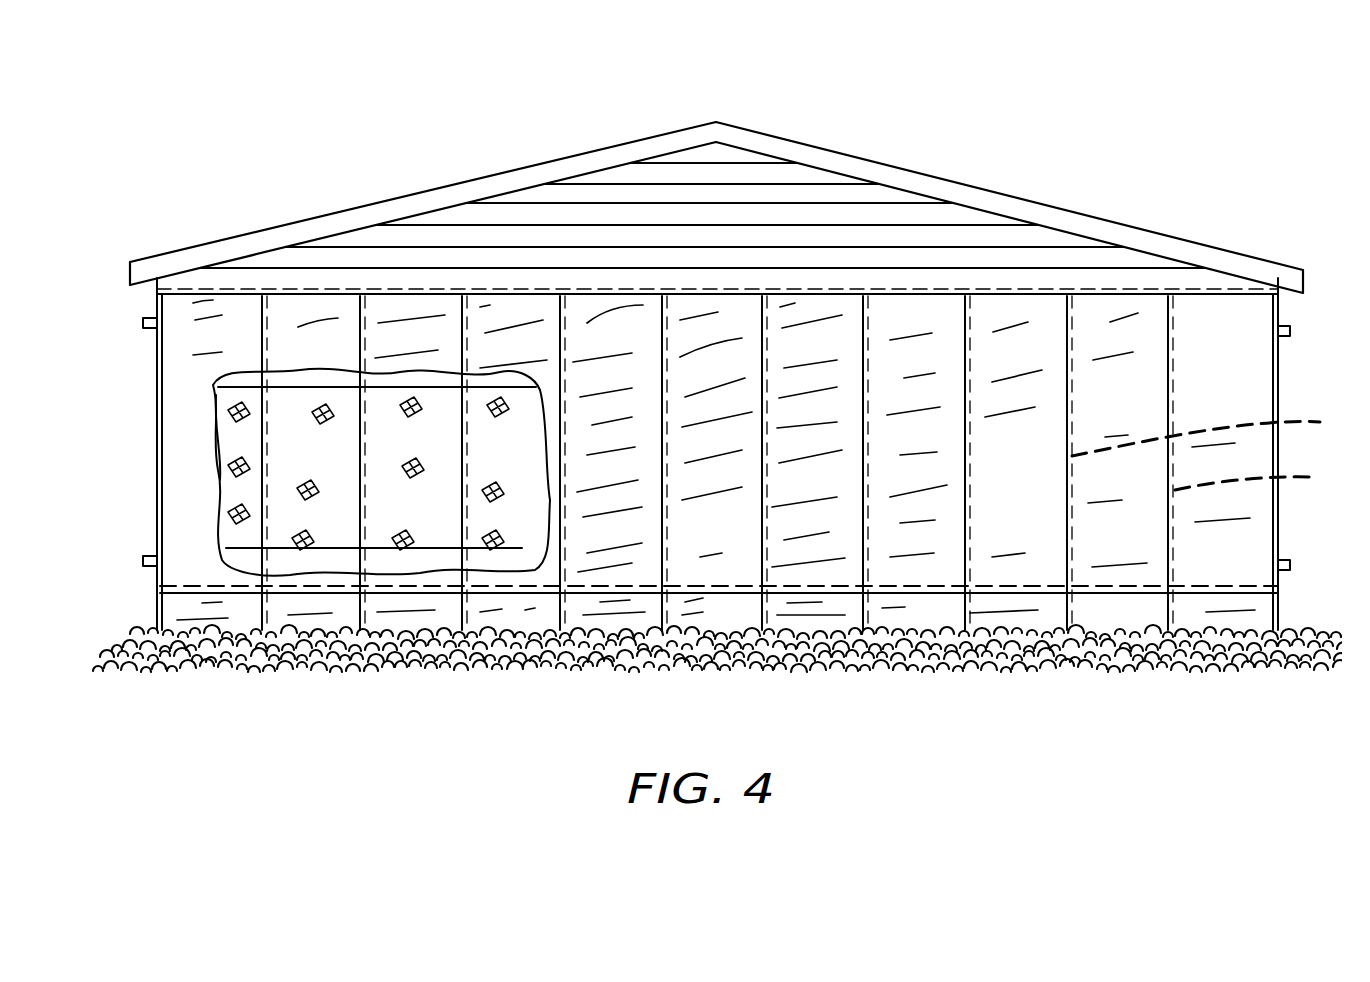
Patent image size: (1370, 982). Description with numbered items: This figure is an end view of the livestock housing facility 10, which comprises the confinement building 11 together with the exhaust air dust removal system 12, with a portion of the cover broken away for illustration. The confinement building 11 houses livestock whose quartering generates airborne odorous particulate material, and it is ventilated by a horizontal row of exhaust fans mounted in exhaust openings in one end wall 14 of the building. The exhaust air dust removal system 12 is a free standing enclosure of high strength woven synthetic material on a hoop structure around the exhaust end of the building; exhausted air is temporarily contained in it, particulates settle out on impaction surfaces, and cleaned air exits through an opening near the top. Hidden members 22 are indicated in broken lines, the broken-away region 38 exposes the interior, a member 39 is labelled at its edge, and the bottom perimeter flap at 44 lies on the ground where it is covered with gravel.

The livestock housing facility 10 is at (1008, 99).
The confinement building 11 is at (608, 130).
The exhaust air dust removal system 12 is at (1296, 349).
The end wall 14 is at (1113, 262).
The hidden tie members 22 is at (1217, 452).
The mesh patch 38 is at (320, 380).
The patch frame member 39 is at (232, 442).
The gravel base 44 is at (405, 665).